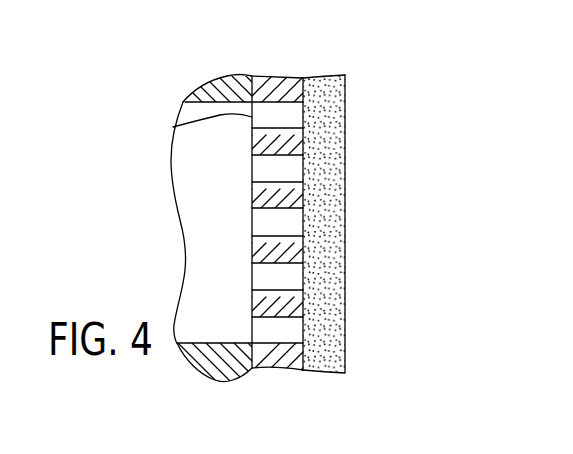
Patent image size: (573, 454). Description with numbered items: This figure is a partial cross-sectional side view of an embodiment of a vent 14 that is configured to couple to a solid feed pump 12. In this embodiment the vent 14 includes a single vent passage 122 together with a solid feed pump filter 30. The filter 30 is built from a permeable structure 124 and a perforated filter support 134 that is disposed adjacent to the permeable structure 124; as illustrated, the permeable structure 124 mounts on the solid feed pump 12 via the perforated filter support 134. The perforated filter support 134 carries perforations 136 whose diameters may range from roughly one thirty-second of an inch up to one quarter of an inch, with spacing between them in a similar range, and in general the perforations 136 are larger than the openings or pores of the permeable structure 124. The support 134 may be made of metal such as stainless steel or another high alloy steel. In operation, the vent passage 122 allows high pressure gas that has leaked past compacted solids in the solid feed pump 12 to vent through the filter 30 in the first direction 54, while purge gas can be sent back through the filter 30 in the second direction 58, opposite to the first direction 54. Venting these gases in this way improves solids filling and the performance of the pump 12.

The solid feed pump 12 is at (217, 76).
The vent 14 is at (218, 392).
The solid feed pump filter 30 is at (347, 390).
The first direction 54 is at (362, 222).
The second direction 58 is at (168, 222).
The vent passage 122 is at (181, 174).
The permeable structure 124 is at (347, 287).
The perforated filter support 134 is at (283, 78).
The perforations 136 is at (175, 124).